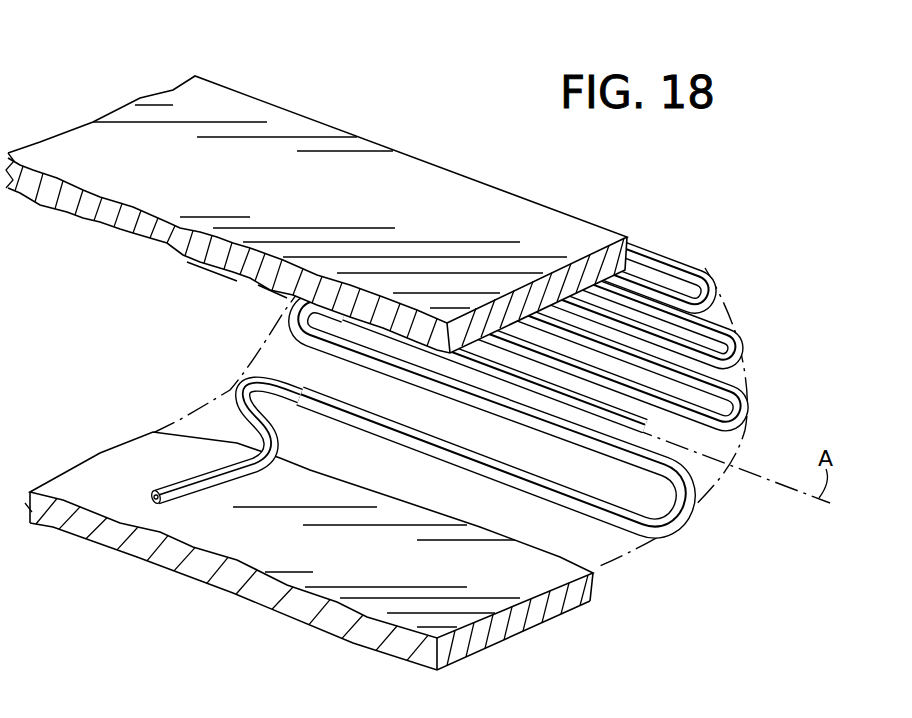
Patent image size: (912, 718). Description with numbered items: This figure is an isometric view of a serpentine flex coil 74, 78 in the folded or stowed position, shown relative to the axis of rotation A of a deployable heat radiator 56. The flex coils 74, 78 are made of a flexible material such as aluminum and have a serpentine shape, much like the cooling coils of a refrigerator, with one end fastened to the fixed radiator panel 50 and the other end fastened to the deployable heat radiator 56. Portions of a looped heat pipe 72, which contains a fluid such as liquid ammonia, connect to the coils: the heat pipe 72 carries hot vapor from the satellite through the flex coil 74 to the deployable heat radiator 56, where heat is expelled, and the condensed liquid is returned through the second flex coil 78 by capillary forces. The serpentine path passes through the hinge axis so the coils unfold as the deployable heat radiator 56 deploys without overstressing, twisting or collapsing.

The fixed heat radiator 50 is at (577, 608).
The deployable heat radiator 56 is at (327, 126).
The looped heat pipe 72 is at (197, 470).
The flex coil 74 is at (574, 376).
The second flex coil 78 is at (744, 370).